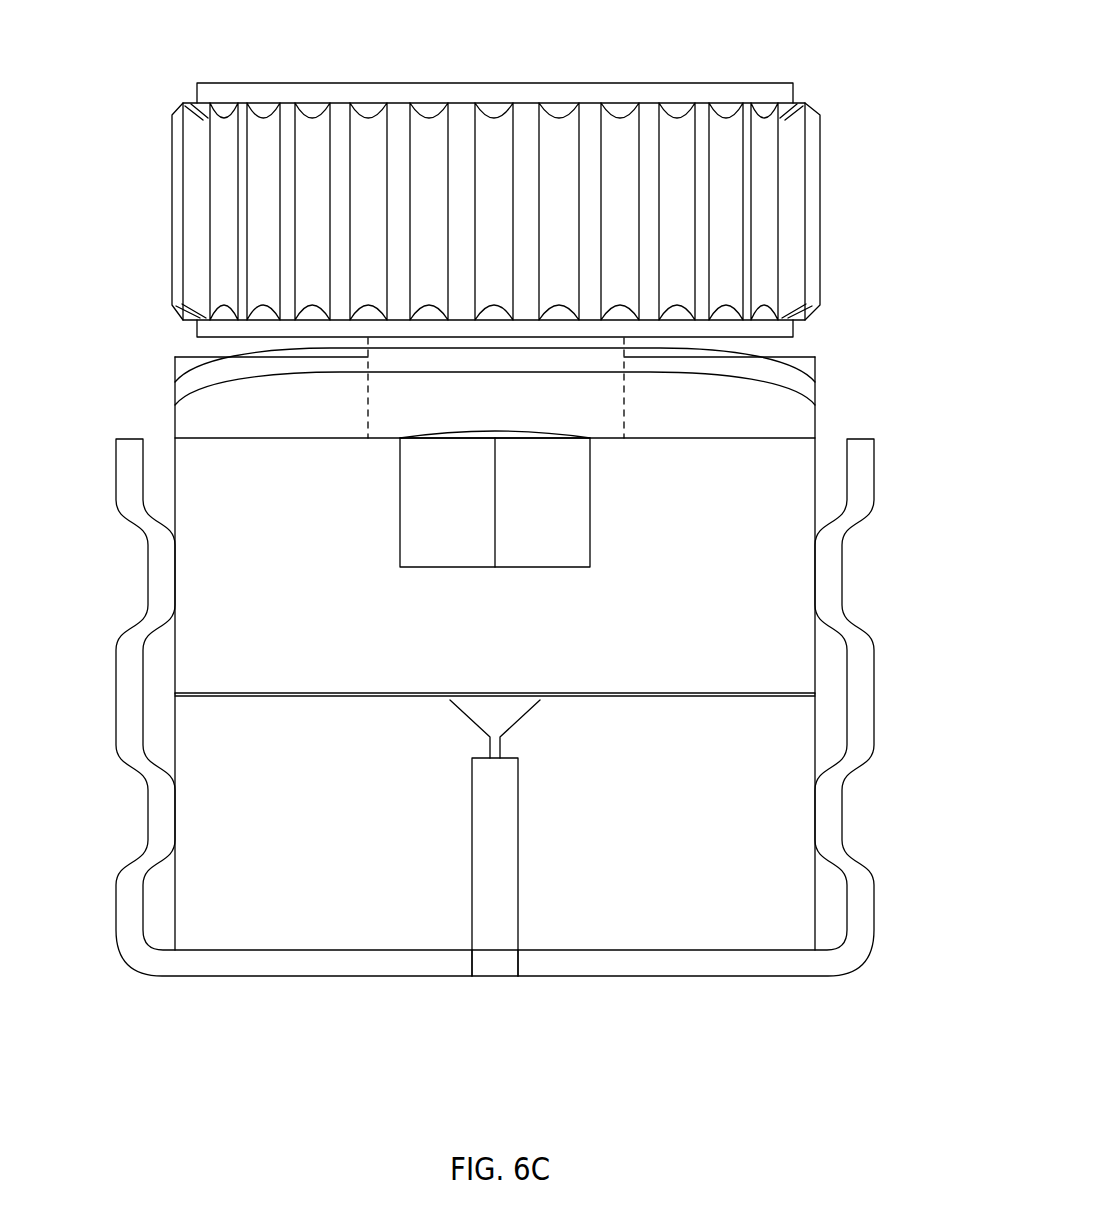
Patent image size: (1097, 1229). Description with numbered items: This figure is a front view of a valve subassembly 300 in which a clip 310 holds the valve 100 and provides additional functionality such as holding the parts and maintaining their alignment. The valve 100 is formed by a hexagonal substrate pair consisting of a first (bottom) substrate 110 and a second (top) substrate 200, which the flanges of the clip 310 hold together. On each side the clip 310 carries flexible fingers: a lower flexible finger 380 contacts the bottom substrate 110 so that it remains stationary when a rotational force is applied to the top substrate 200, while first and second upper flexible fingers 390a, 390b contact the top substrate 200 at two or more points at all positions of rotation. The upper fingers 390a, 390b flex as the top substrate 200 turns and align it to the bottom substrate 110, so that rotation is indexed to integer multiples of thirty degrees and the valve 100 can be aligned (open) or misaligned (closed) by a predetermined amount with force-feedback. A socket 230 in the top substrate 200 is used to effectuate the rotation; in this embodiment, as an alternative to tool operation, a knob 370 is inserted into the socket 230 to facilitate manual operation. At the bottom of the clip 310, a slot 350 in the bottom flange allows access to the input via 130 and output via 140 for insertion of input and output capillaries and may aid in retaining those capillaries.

The valve subassembly 300 is at (853, 60).
The knob 370 is at (170, 193).
The clip 310 is at (175, 361).
The valve 100 is at (836, 427).
The socket 230 is at (400, 495).
The second (top) substrate 200 is at (230, 562).
The input via 130 is at (475, 830).
The output via 140 is at (495, 867).
The first (bottom) substrate 110 is at (230, 812).
The lower flexible finger 380 is at (834, 807).
The first upper flexible finger 390a is at (495, 707).
The second upper flexible finger 390b is at (495, 707).
The slot 350 is at (503, 957).